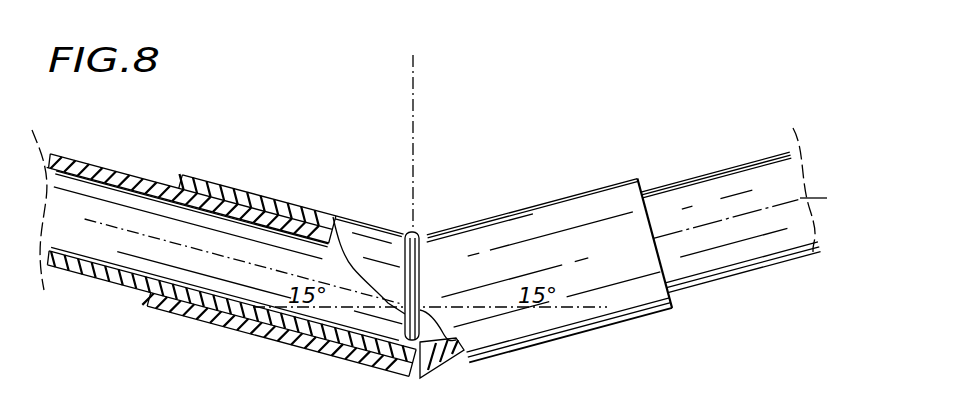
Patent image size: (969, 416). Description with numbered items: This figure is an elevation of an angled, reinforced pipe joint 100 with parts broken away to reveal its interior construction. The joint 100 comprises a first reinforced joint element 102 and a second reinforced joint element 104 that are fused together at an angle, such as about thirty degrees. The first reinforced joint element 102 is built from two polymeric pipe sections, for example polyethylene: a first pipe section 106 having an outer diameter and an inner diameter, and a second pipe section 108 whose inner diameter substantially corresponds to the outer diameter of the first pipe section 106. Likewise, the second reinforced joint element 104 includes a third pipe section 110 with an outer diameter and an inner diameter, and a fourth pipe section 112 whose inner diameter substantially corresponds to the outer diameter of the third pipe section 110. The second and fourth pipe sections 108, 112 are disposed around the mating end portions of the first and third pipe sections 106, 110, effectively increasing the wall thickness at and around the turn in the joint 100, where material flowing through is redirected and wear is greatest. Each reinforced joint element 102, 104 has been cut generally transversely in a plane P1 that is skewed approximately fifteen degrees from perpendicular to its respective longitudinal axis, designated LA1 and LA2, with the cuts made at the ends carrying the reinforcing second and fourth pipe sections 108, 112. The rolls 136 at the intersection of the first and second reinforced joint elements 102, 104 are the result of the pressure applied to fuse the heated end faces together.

The angled, reinforced pipe joint 100 is at (570, 62).
The first reinforced joint element 102 is at (303, 180).
The second reinforced joint element 104 is at (597, 178).
The first pipe section 106 is at (127, 180).
The second pipe section 108 is at (214, 181).
The third pipe section 110 is at (727, 188).
The fourth pipe section 112 is at (492, 240).
The rolls 136 is at (403, 250).
The longitudinal axis of first reinforced joint element LA1 is at (40, 198).
The longitudinal axis of second reinforced joint element LA2 is at (802, 176).
The cutting plane P1 is at (414, 95).